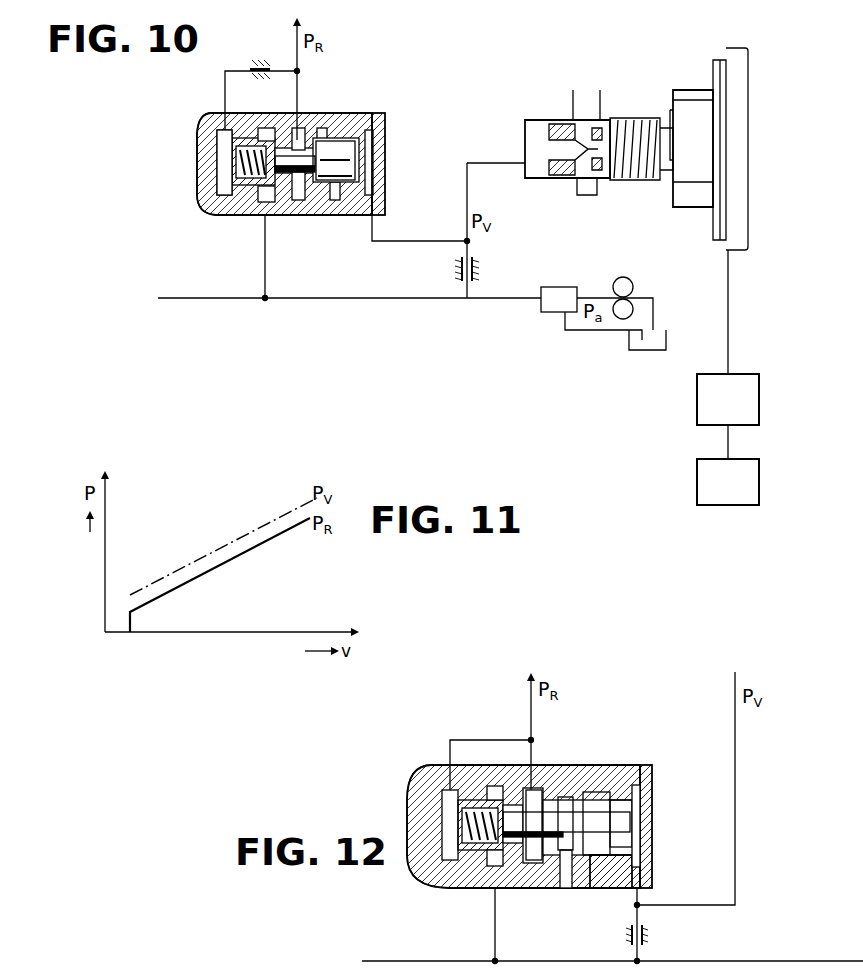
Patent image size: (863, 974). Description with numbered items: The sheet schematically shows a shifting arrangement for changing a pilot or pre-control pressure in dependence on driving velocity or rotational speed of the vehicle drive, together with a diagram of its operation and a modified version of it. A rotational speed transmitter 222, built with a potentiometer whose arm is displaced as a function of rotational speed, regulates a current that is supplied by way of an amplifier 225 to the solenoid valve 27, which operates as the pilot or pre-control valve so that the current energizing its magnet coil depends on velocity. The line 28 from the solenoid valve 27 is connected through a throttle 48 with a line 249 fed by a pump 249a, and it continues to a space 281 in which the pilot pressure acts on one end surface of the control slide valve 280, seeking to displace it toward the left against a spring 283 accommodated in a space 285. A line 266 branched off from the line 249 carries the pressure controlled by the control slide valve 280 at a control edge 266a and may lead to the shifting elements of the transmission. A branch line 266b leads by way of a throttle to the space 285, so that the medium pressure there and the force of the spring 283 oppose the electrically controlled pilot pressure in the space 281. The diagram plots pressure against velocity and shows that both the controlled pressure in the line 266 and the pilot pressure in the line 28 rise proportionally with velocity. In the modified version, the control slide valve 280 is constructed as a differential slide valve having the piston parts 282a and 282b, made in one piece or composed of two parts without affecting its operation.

In FIG. 10, the solenoid valve 27 is at (708, 84).
In FIG. 10, the line 28 is at (467, 185).
In FIG. 10, the throttle 48 is at (480, 268).
In FIG. 10, the rotational speed transmitter 222 is at (728, 482).
In FIG. 10, the amplifier 225 is at (728, 399).
In FIG. 10, the line 249 is at (452, 300).
In FIG. 10, the pump 249a is at (628, 290).
In FIG. 10, the line 266 is at (297, 48).
In FIG. 12, the line 266 is at (525, 708).
In FIG. 10, the control edge 266a is at (268, 205).
In FIG. 10, the branch line 266b is at (225, 72).
In FIG. 10, the control slide valve 280 is at (292, 152).
In FIG. 12, the control slide valve 280 is at (540, 815).
In FIG. 10, the space 281 is at (372, 140).
In FIG. 12, the space 281 is at (645, 825).
In FIG. 12, the piston part 282a is at (565, 800).
In FIG. 12, the piston part 282b is at (612, 800).
In FIG. 10, the spring 283 is at (232, 152).
In FIG. 10, the space 285 is at (222, 190).
In FIG. 12, the space 285 is at (445, 806).